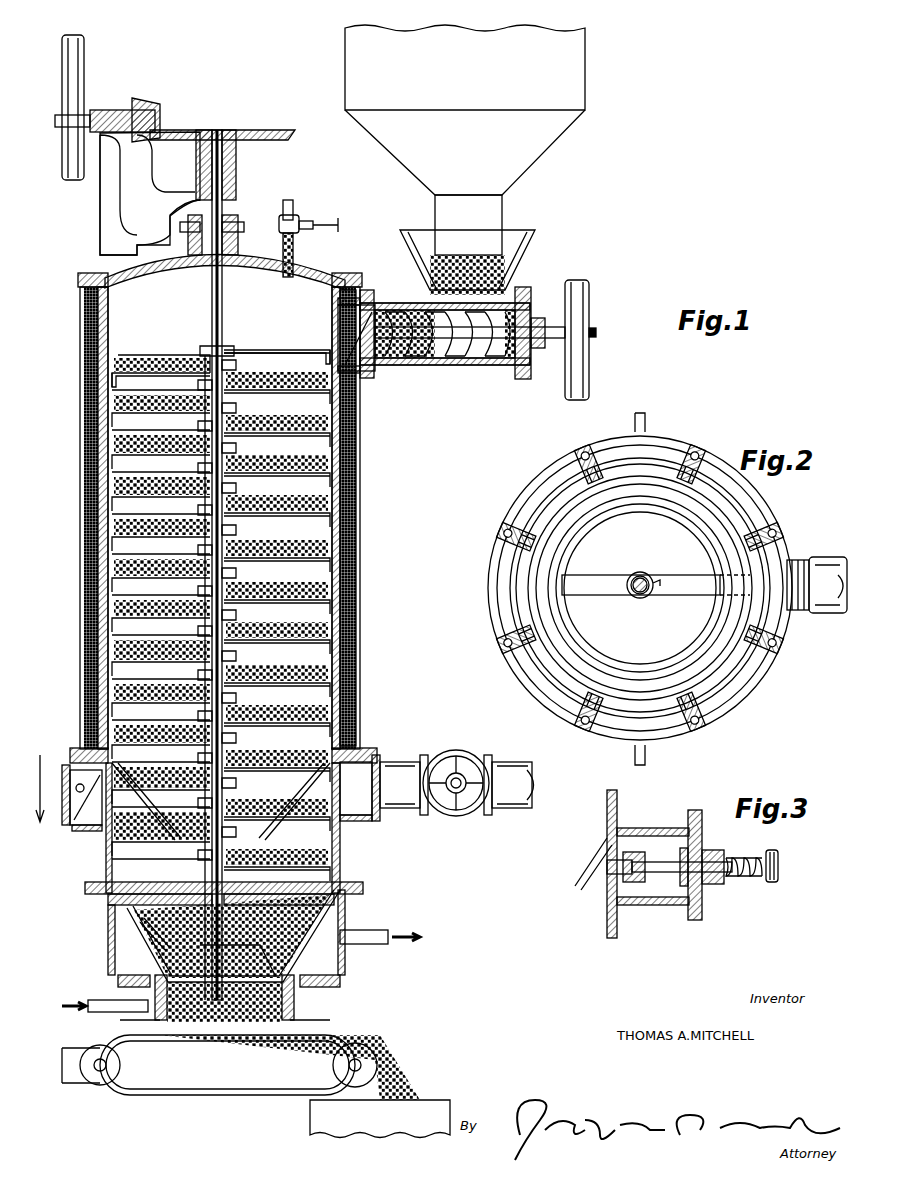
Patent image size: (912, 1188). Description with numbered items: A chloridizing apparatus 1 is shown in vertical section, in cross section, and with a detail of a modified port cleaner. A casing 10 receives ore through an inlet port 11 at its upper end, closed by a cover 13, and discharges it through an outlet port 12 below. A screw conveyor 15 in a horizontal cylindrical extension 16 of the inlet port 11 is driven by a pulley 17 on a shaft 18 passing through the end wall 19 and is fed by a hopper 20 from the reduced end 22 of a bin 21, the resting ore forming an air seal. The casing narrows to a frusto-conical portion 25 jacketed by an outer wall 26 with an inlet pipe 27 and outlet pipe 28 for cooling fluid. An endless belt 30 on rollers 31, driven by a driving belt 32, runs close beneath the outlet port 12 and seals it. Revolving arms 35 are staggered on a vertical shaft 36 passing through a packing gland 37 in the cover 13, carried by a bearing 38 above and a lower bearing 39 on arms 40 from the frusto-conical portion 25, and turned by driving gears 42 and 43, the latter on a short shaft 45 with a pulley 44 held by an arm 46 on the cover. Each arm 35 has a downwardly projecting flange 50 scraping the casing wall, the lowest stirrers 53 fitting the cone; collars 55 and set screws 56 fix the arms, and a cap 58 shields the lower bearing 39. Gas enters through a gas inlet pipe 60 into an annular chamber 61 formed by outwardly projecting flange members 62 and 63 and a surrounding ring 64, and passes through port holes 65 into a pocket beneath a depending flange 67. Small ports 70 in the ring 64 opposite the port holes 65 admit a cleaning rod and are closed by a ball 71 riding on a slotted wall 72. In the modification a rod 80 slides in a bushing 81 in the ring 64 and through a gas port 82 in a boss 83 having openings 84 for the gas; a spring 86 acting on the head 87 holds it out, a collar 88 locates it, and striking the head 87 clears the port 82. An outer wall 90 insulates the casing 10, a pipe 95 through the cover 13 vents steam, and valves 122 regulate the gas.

In FIG. 2, the apparatus 1 is at (500, 650).
In FIG. 1, the casing 10 is at (362, 540).
In FIG. 2, the casing 10 is at (578, 498).
In FIG. 3, the casing 10 is at (617, 796).
In FIG. 1, the inlet port 11 is at (356, 335).
In FIG. 1, the outlet port 12 is at (270, 1003).
In FIG. 1, the cover 13 is at (265, 262).
In FIG. 1, the screw conveyor 15 is at (448, 368).
In FIG. 1, the horizontal cylindrical extension 16 is at (415, 368).
In FIG. 1, the pulley 17 is at (589, 300).
In FIG. 1, the shaft 18 is at (596, 332).
In FIG. 1, the end wall 19 is at (532, 292).
In FIG. 1, the hopper 20 is at (525, 243).
In FIG. 1, the bin 21 is at (545, 145).
In FIG. 1, the reduced end 22 is at (468, 225).
In FIG. 1, the frusto-conical portion 25 is at (130, 945).
In FIG. 1, the outer wall 26 is at (345, 953).
In FIG. 1, the inlet pipe 27 is at (108, 988).
In FIG. 1, the outlet pipe 28 is at (378, 920).
In FIG. 1, the endless belt 30 is at (190, 1040).
In FIG. 1, the rollers 31 is at (120, 1068).
In FIG. 1, the driving belt 32 is at (70, 1043).
In FIG. 1, the revolving arms 35 is at (162, 373).
In FIG. 2, the revolving arms 35 is at (656, 585).
In FIG. 1, the vertical shaft 36 is at (210, 312).
In FIG. 2, the vertical shaft 36 is at (640, 572).
In FIG. 1, the packing gland 37 is at (238, 218).
In FIG. 1, the bearing 38 is at (236, 170).
In FIG. 1, the lower bearing 39 is at (258, 960).
In FIG. 1, the arms 40 is at (115, 905).
In FIG. 1, the driving gear 42 is at (240, 128).
In FIG. 1, the driving gear 43 is at (150, 100).
In FIG. 1, the pulley 44 is at (86, 73).
In FIG. 1, the short shaft 45 is at (110, 107).
In FIG. 1, the arm 46 is at (150, 193).
In FIG. 1, the downwardly projecting flange 50 is at (110, 382).
In FIG. 1, the stirrers 53 is at (140, 930).
In FIG. 1, the collars 55 is at (205, 345).
In FIG. 2, the collars 55 is at (648, 598).
In FIG. 1, the set screws 56 is at (240, 370).
In FIG. 2, the set screws 56 is at (664, 572).
In FIG. 1, the cap 58 is at (352, 878).
In FIG. 1, the gas inlet pipe 60 is at (564, 800).
In FIG. 2, the gas inlet pipe 60 is at (835, 548).
In FIG. 1, the annular chamber 61 is at (221, 790).
In FIG. 2, the annular chamber 61 is at (640, 588).
In FIG. 1, the outwardly projecting flange member 62 is at (360, 823).
In FIG. 1, the outwardly projecting flange member 63 is at (362, 748).
In FIG. 1, the surrounding ring 64 is at (78, 838).
In FIG. 2, the surrounding ring 64 is at (500, 582).
In FIG. 3, the surrounding ring 64 is at (702, 830).
In FIG. 1, the port holes 65 is at (223, 828).
In FIG. 2, the port holes 65 is at (680, 492).
In FIG. 1, the depending flange 67 is at (313, 801).
In FIG. 3, the depending flange 67 is at (590, 852).
In FIG. 2, the small ports 70 is at (500, 528).
In FIG. 2, the ball 71 is at (505, 520).
In FIG. 1, the slotted wall 72 is at (86, 799).
In FIG. 2, the slotted wall 72 is at (520, 532).
In FIG. 3, the rod 80 is at (712, 882).
In FIG. 3, the bushing 81 is at (712, 884).
In FIG. 3, the gas port 82 is at (615, 868).
In FIG. 3, the boss 83 is at (648, 906).
In FIG. 3, the openings 84 is at (640, 826).
In FIG. 3, the spring 86 is at (755, 876).
In FIG. 3, the head 87 is at (780, 866).
In FIG. 3, the collar 88 is at (684, 846).
In FIG. 1, the outer wall 90 is at (362, 645).
In FIG. 1, the pipe 95 is at (294, 238).
In FIG. 1, the valves 122 is at (488, 820).